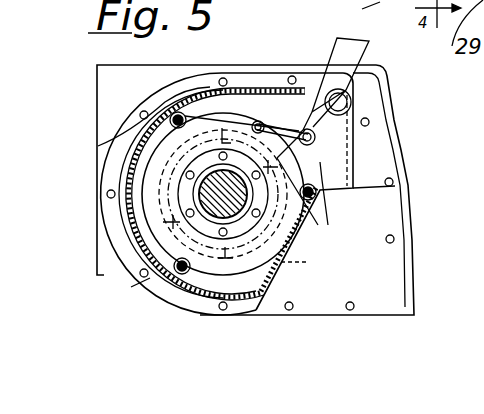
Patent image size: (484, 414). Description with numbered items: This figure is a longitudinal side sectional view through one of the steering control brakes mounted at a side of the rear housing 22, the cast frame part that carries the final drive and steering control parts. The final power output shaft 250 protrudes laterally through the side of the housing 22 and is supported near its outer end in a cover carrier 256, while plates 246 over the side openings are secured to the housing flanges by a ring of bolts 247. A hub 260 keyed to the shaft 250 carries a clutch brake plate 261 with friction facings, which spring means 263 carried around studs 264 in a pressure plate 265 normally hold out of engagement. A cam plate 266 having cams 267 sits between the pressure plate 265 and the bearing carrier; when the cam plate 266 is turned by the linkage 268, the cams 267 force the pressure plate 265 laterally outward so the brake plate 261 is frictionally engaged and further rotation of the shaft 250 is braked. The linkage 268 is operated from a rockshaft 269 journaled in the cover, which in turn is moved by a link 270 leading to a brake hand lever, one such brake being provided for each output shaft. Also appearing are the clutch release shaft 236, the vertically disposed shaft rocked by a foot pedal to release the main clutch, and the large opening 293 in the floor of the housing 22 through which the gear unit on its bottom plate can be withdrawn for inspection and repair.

The rear housing 22 is at (405, 294).
The clutch release shaft 236 is at (395, 186).
The plates 246 is at (390, 128).
The ring of bolts 247 is at (110, 189).
The final power output shaft 250 is at (200, 200).
The cover carrier 256 is at (182, 227).
The hub 260 is at (116, 289).
The clutch brake plate 261 is at (173, 265).
The spring means 263 is at (160, 113).
The studs 264 is at (170, 107).
The pressure plate 265 is at (282, 157).
The cam plate 266 is at (326, 225).
The cams 267 is at (306, 262).
The linkage 268 is at (303, 130).
The rockshaft 269 is at (340, 95).
The link 270 is at (337, 40).
The large opening 293 is at (337, 12).